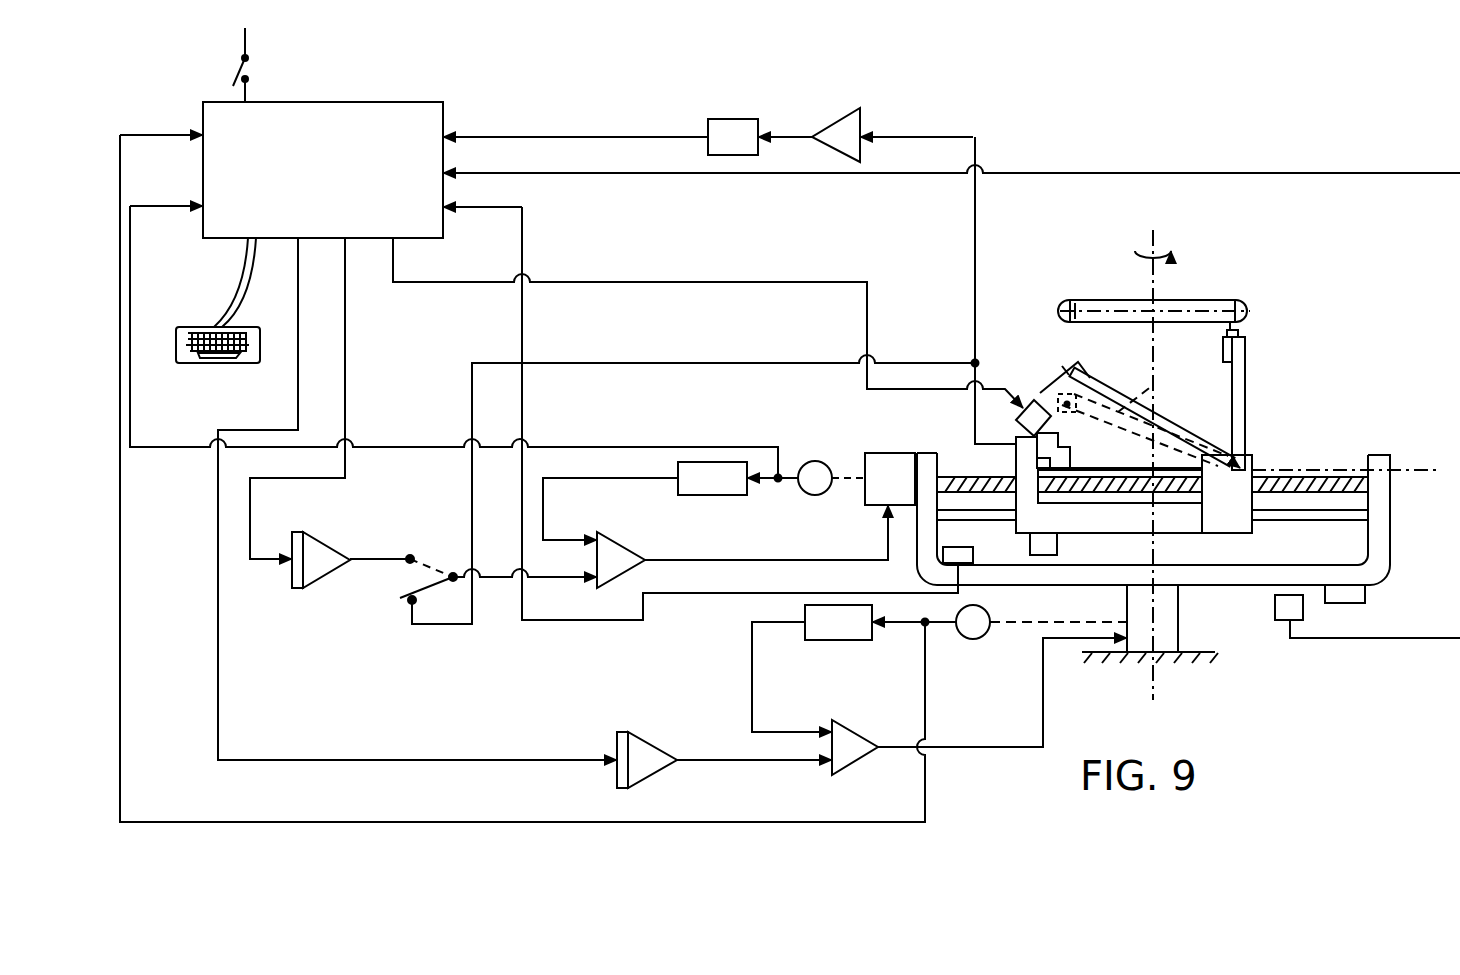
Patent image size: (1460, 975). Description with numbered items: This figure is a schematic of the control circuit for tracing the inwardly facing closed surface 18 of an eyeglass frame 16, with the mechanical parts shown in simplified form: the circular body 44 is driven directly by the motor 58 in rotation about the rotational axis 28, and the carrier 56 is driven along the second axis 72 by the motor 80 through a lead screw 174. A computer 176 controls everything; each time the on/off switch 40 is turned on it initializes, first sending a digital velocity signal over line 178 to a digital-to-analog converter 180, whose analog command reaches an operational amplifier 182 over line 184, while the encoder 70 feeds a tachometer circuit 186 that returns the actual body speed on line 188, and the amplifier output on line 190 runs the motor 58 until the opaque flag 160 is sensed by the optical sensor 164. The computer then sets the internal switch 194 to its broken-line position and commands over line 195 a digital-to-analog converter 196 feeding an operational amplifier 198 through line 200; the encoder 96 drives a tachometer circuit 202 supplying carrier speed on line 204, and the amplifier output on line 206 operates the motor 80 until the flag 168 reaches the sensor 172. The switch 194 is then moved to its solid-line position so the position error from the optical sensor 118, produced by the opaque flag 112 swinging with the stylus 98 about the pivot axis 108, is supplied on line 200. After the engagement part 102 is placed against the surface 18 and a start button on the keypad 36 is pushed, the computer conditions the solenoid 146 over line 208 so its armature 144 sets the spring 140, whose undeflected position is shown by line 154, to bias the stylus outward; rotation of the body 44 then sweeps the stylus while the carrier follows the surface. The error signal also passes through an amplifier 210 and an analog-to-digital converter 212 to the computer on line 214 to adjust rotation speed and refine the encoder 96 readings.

The eyeglass frame 16 is at (1064, 305).
The closed surface 18 is at (1080, 305).
The rotational axis 28 is at (1160, 308).
The keypad 36 is at (245, 327).
The on/off switch 40 is at (238, 70).
The circular body 44 is at (1392, 524).
The carrier 56 is at (1252, 470).
The motor 58 is at (1180, 624).
The encoder 70 is at (973, 640).
The second axis 72 is at (1412, 446).
The motor 80 is at (877, 453).
The encoder 96 is at (832, 469).
The stylus 98 is at (1245, 432).
The engagement part 102 is at (1225, 333).
The pivot axis 108 is at (1238, 465).
The opaque flag 112 is at (1070, 462).
The optical sensor 118 is at (1017, 444).
The spring 140 is at (1102, 382).
The armature 144 is at (1060, 374).
The solenoid 146 is at (1034, 398).
The undeflected spring position line 154 is at (1148, 390).
The opaque flag 160 is at (1362, 600).
The optical sensor 164 is at (1274, 620).
The flag 168 is at (1057, 546).
The sensor 172 is at (964, 547).
The lead screw 174 is at (946, 453).
The computer 176 is at (356, 86).
The line 178 is at (460, 759).
The digital-to-analog converter 180 is at (648, 736).
The operational amplifier 182 is at (856, 764).
The line 184 is at (754, 760).
The tachometer circuit 186 is at (840, 640).
The line 188 is at (750, 660).
The line 190 is at (1010, 746).
The internal switch 194 is at (427, 598).
The line 195 is at (345, 374).
The digital-to-analog converter 196 is at (319, 543).
The operational amplifier 198 is at (618, 548).
The line 200 is at (526, 583).
The tachometer circuit 202 is at (712, 495).
The line 204 is at (584, 476).
The line 206 is at (784, 560).
The line 208 is at (706, 282).
The amplifier 210 is at (857, 118).
The analog-to-digital converter 212 is at (734, 119).
The line 214 is at (478, 136).